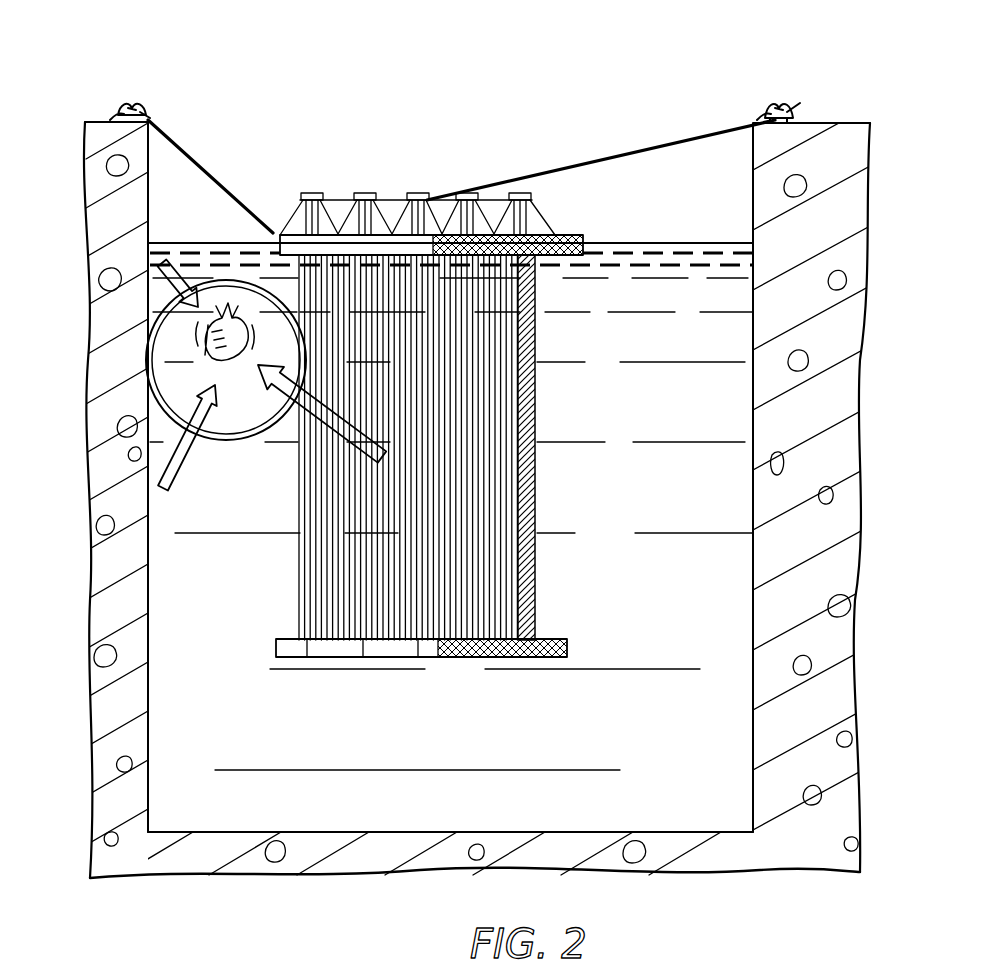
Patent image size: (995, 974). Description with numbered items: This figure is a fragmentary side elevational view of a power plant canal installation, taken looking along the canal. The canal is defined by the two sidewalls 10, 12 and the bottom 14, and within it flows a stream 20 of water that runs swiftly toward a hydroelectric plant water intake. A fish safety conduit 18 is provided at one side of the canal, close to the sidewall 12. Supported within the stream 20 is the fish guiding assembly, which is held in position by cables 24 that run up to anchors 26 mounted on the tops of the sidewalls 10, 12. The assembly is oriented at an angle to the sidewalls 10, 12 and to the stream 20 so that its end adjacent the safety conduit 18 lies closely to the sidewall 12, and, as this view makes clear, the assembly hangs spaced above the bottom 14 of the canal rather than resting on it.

The sidewall 10 is at (154, 505).
The sidewall 12 is at (754, 466).
The bottom 14 is at (358, 832).
The fish safety conduit 18 is at (150, 344).
The stream 20 is at (677, 595).
The cables 24 is at (610, 158).
The anchors 26 is at (778, 96).